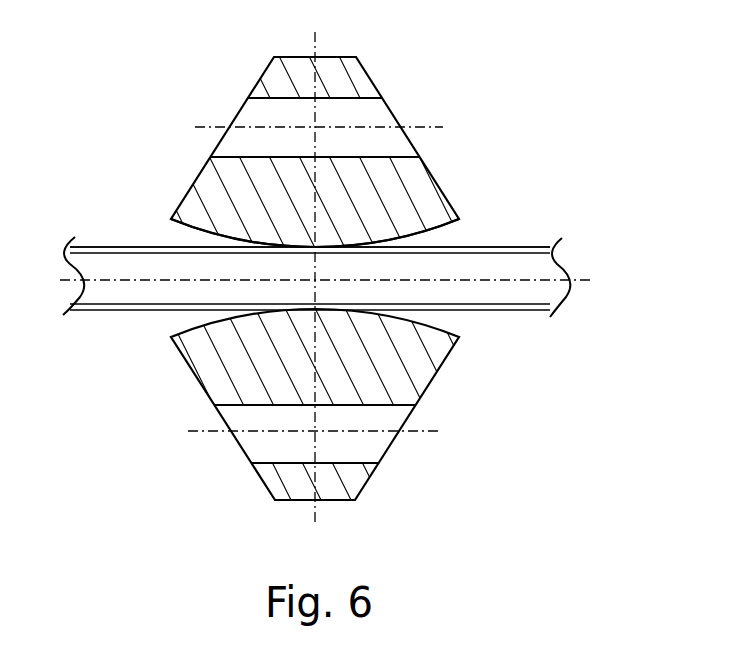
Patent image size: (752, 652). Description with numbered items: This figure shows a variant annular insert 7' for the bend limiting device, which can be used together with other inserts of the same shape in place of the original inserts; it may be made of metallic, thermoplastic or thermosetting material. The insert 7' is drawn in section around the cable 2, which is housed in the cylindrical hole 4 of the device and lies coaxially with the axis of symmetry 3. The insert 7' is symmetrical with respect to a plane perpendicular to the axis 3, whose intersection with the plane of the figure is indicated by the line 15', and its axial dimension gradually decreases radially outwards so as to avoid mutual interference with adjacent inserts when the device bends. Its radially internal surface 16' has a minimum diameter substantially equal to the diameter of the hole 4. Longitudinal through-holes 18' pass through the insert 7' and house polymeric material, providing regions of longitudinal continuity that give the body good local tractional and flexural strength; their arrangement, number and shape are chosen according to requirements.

The cable 2 is at (515, 290).
The axis of symmetry 3 is at (590, 280).
The cylindrical hole 4 is at (185, 252).
The insert 7' is at (381, 326).
The plane of symmetry 15' is at (392, 277).
The radially internal surface 16' is at (362, 234).
The longitudinal through-holes 18' is at (381, 326).